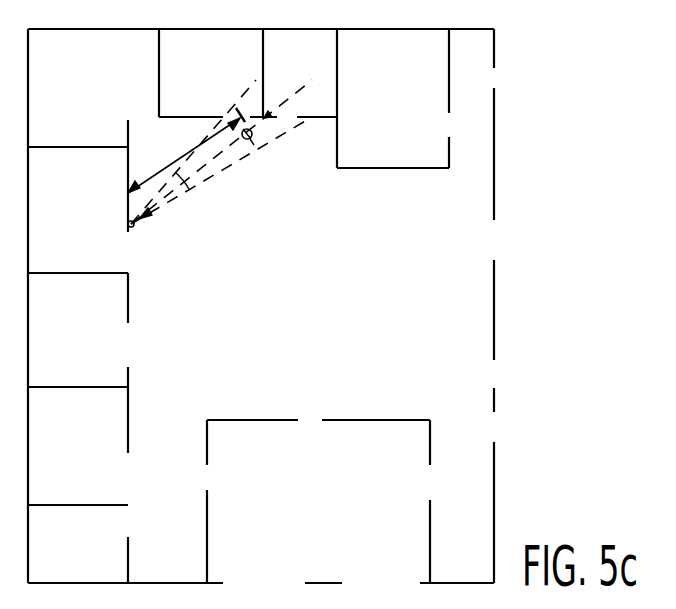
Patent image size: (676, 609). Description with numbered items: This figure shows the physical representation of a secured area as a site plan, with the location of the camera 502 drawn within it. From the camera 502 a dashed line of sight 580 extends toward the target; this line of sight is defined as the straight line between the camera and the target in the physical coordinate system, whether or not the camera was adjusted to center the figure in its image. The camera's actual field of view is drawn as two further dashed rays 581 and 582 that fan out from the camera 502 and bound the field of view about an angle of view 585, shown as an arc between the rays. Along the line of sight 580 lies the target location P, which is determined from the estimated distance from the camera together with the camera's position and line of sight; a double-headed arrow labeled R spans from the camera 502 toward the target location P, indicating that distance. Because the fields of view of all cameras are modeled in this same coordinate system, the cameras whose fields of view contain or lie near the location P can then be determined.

The camera 502 is at (134, 226).
The line of sight 580 is at (290, 100).
The ray 581 is at (212, 128).
The ray 582 is at (228, 167).
The angle of view 585 is at (186, 182).
The target location P is at (252, 136).
The radius arrow R is at (184, 155).